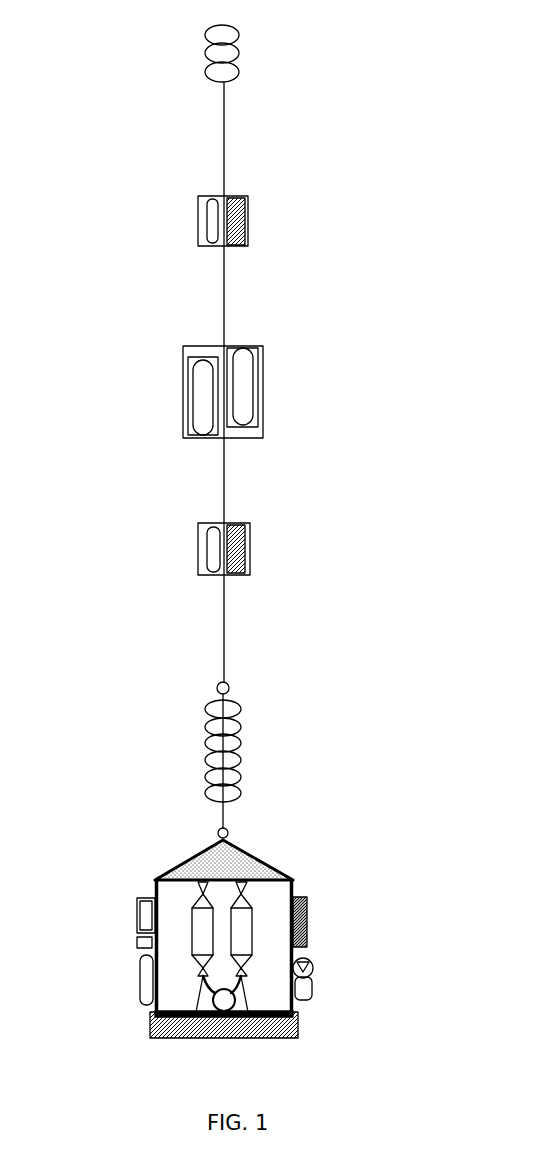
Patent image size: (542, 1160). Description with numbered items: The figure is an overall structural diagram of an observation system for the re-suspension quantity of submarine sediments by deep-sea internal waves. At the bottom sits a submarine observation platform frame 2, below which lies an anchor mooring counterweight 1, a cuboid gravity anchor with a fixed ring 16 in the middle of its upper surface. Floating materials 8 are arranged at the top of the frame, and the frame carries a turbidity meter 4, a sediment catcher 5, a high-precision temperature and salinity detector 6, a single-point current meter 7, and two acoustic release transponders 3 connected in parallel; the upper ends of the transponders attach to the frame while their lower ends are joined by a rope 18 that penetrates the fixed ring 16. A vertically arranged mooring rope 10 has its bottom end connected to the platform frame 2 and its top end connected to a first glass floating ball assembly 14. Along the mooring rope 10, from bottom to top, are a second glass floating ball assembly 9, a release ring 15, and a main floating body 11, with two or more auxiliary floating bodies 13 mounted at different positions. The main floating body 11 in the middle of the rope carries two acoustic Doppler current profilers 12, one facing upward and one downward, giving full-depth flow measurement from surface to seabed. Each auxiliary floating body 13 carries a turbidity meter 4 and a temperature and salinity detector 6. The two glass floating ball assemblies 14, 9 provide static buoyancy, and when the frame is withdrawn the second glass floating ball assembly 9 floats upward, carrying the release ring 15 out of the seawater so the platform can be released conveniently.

The anchor mooring counterweight 1 is at (300, 1025).
The submarine observation platform frame 2 is at (293, 880).
The acoustic release transponder 3 is at (193, 907).
The turbidity meter 4 is at (243, 217).
The sediment catcher 5 is at (310, 978).
The high-precision temperature and salinity detector 6 is at (208, 220).
The single-point current meter 7 is at (138, 920).
The floating material 8 is at (225, 865).
The second glass floating ball assembly 9 is at (205, 743).
The mooring rope 10 is at (225, 610).
The main floating body 11 is at (260, 348).
The acoustic Doppler current profiler 12 is at (203, 398).
The auxiliary floating body 13 is at (247, 197).
The first glass floating ball assembly 14 is at (205, 53).
The release ring 15 is at (230, 682).
The fixed ring 16 is at (245, 1015).
The rope 18 is at (211, 993).